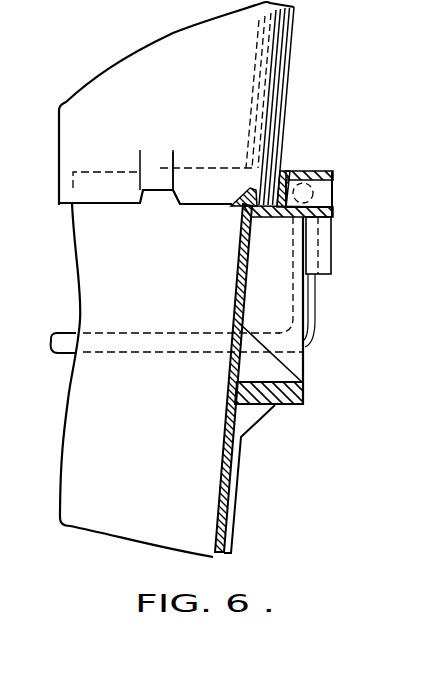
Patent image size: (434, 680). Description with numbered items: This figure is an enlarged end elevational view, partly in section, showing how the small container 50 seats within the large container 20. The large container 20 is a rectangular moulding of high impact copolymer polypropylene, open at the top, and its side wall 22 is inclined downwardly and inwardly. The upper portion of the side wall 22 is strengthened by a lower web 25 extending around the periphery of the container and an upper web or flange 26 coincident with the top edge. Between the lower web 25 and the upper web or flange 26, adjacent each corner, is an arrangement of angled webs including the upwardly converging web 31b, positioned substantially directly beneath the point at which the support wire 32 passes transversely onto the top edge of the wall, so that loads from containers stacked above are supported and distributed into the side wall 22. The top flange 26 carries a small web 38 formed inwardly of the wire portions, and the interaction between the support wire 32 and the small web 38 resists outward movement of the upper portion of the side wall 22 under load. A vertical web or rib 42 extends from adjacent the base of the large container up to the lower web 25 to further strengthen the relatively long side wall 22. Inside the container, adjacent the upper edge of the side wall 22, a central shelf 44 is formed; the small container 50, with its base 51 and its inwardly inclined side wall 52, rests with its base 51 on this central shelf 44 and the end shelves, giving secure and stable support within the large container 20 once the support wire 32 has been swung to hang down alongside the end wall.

The rectangular container 20 is at (244, 499).
The side wall 22 is at (235, 465).
The lower web 25 is at (301, 407).
The upper web or flange 26 is at (318, 171).
The upwardly converging web 31b is at (294, 363).
The support wire 32 is at (143, 331).
The small web 38 is at (294, 166).
The vertical web or rib 42 is at (233, 535).
The central shelf 44 is at (242, 205).
The rectangular container 50 is at (295, 51).
The base 51 is at (203, 202).
The side wall 52 is at (172, 87).